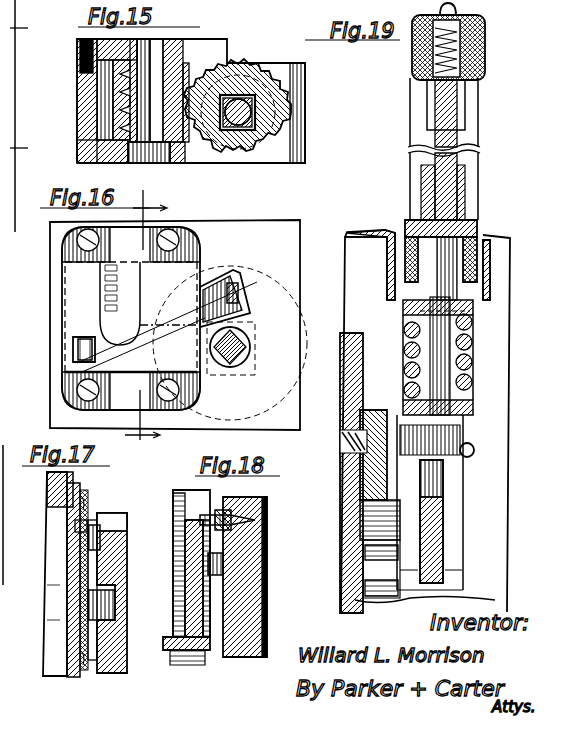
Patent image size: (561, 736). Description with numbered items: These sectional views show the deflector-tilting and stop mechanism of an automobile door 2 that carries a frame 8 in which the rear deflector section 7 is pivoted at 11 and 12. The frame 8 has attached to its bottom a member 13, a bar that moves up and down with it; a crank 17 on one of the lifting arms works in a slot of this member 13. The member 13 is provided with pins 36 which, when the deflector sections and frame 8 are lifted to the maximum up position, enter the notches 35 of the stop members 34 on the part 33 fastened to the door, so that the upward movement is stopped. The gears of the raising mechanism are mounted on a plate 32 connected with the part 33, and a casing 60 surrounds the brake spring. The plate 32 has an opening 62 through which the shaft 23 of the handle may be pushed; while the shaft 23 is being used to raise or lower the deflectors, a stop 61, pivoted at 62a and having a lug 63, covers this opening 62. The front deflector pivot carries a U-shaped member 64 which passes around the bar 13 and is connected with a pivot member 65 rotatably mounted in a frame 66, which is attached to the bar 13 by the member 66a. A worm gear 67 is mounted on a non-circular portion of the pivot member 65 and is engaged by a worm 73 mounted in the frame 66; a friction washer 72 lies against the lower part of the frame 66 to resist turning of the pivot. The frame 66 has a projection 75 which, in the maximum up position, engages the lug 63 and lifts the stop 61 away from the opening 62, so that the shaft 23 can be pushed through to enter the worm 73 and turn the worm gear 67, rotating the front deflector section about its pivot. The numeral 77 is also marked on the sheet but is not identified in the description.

In FIG. 19, the door 2 is at (372, 230).
In FIG. 19, the rear deflector section 7 is at (462, 140).
In FIG. 19, the frame 8 is at (487, 45).
In FIG. 19, the pivot 11 is at (487, 75).
In FIG. 19, the pivot 12 is at (472, 327).
In FIG. 18, the member 13 is at (184, 568).
In FIG. 19, the member 13 is at (442, 555).
In FIG. 16, the crank 17 is at (146, 321).
In FIG. 16, the shaft 23 is at (233, 367).
In FIG. 17, the shaft 23 is at (108, 613).
In FIG. 16, the plate 32 is at (255, 285).
In FIG. 17, the plate 32 is at (63, 500).
In FIG. 16, the part 33 is at (268, 232).
In FIG. 17, the part 33 is at (73, 477).
In FIG. 18, the part 33 is at (262, 540).
In FIG. 18, the stop member 34 is at (218, 510).
In FIG. 19, the stop member 34 is at (365, 478).
In FIG. 18, the notch 35 is at (255, 595).
In FIG. 19, the notch 35 is at (366, 565).
In FIG. 18, the pin 36 is at (224, 565).
In FIG. 19, the pin 36 is at (360, 545).
In FIG. 16, the casing 60 is at (282, 305).
In FIG. 16, the stop 61 is at (245, 283).
In FIG. 17, the stop 61 is at (72, 585).
In FIG. 16, the opening 62 is at (252, 346).
In FIG. 16, the pivot 62a is at (72, 345).
In FIG. 16, the lug 63 is at (232, 272).
In FIG. 17, the lug 63 is at (97, 520).
In FIG. 15, the U-shaped member 64 is at (29, 30).
In FIG. 15, the pivot member 65 is at (240, 95).
In FIG. 15, the frame 66 is at (292, 103).
In FIG. 18, the frame 66 is at (172, 660).
In FIG. 18, the member 66a is at (190, 525).
In FIG. 15, the worm gear 67 is at (295, 91).
In FIG. 15, the friction washer 72 is at (138, 163).
In FIG. 15, the worm 73 is at (112, 118).
In FIG. 16, the projection 75 is at (248, 313).
In FIG. 17, the projection 75 is at (103, 544).
In FIG. 15, the member 77 is at (28, 149).